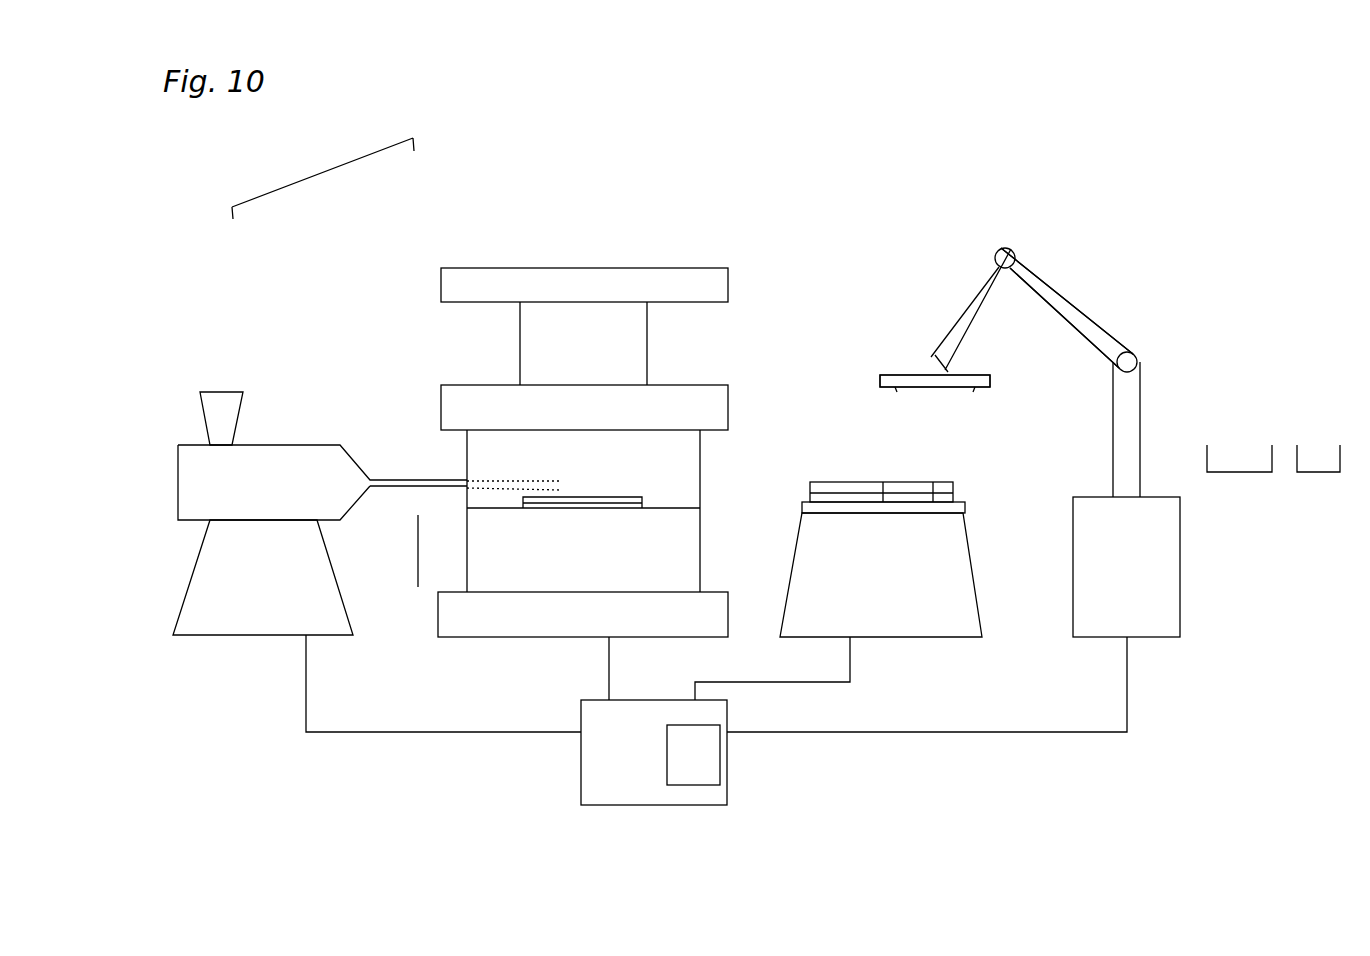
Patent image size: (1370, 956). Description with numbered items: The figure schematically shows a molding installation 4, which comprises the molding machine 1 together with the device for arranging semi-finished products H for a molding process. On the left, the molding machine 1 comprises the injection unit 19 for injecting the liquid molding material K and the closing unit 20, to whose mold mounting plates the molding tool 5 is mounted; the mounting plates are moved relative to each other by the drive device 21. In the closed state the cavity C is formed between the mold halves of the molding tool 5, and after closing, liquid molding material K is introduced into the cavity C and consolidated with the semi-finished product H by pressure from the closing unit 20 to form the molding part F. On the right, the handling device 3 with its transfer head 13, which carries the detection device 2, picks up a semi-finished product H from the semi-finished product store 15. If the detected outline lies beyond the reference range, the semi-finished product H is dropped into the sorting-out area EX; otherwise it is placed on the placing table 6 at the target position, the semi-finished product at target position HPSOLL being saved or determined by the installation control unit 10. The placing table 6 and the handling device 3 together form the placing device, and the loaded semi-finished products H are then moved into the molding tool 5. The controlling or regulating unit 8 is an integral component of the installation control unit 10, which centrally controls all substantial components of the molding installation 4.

The molding machine 1 is at (319, 168).
The injection unit 19 is at (276, 365).
The closing unit 20 is at (458, 240).
The drive device 21 is at (628, 337).
The cavity C is at (617, 495).
The liquid molding material K is at (562, 500).
The semi-finished product H is at (618, 497).
The molding part F is at (408, 550).
The molding tool 5 is at (688, 490).
The molding installation 4 is at (973, 190).
The handling device 3 is at (1094, 269).
The transfer head 13 is at (927, 375).
The detection device 2 is at (935, 381).
The semi-finished product at target position HPSOLL is at (934, 500).
The placing table 6 is at (957, 507).
The semi-finished product store 15 is at (1238, 472).
The sorting-out area EX is at (1318, 472).
The installation control unit 10 is at (580, 770).
The controlling or regulating unit 8 is at (727, 755).